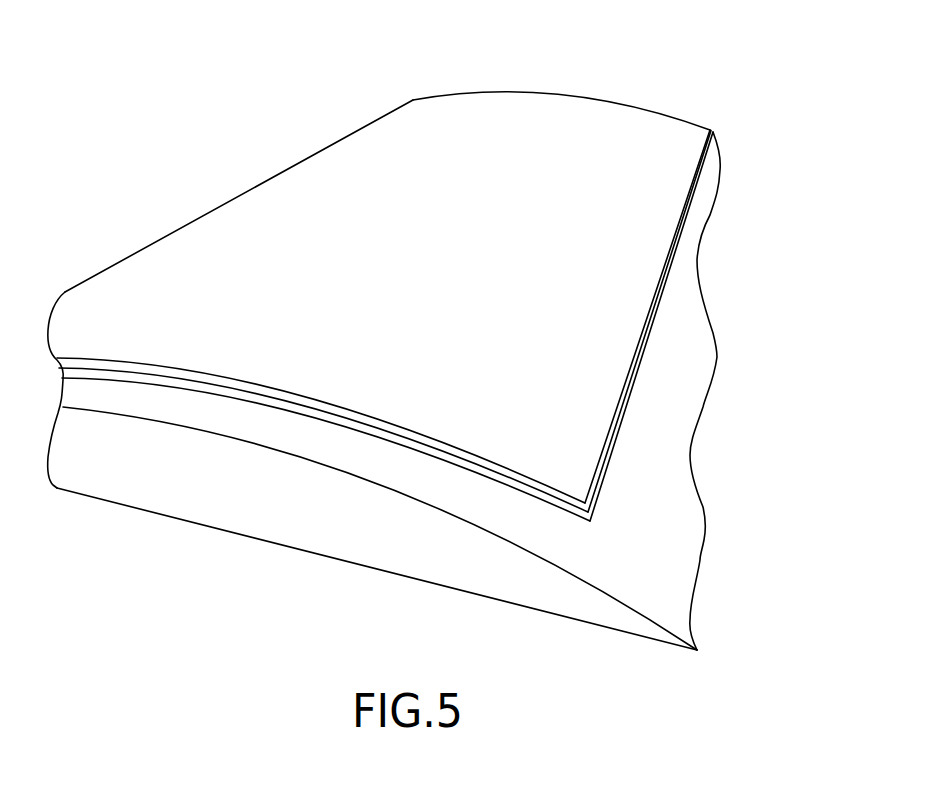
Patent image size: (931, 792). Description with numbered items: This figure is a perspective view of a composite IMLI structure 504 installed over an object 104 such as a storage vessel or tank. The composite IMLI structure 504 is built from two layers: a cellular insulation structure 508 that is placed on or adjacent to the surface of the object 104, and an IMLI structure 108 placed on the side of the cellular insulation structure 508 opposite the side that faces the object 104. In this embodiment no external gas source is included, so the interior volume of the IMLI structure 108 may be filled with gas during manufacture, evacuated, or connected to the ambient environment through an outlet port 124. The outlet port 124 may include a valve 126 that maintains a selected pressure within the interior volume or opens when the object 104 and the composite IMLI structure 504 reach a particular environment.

The composite IMLI structure 504 is at (476, 93).
The IMLI structure 108 is at (673, 126).
The cellular insulation structure 508 is at (692, 217).
The outlet port 124 is at (291, 376).
The valve 126 is at (326, 449).
The object 104 is at (683, 560).